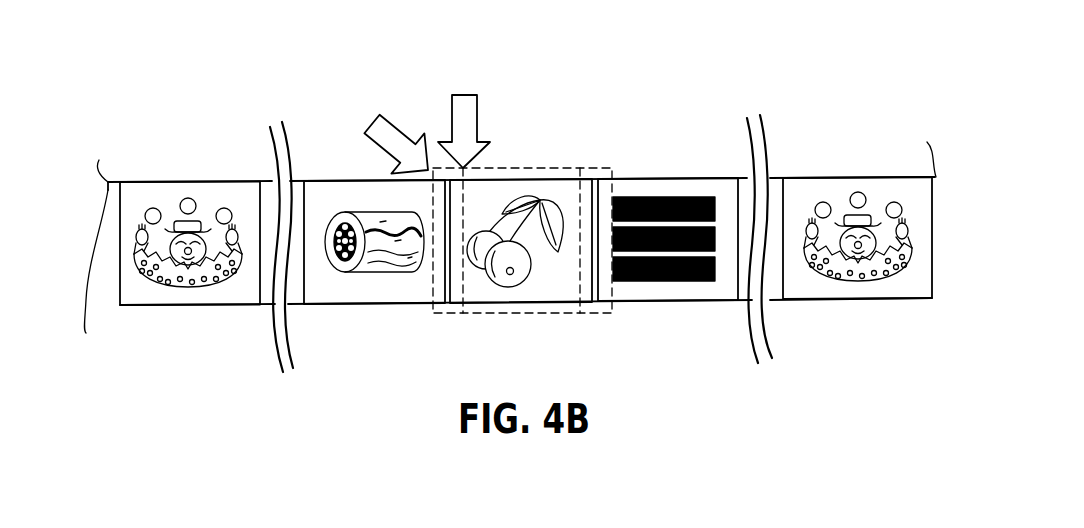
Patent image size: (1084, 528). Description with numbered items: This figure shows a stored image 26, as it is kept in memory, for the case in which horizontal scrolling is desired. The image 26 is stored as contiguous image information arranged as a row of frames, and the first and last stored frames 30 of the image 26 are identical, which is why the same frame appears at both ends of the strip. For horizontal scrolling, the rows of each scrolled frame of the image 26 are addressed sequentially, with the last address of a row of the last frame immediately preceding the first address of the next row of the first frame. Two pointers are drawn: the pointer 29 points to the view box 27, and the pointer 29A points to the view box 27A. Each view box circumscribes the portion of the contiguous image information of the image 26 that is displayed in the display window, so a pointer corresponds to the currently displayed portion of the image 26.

The image 26 is at (670, 178).
The view box 27 is at (577, 168).
The view box 27A is at (612, 316).
The pointer 29 is at (370, 122).
The pointer 29A is at (460, 95).
The frames 30 is at (197, 182).